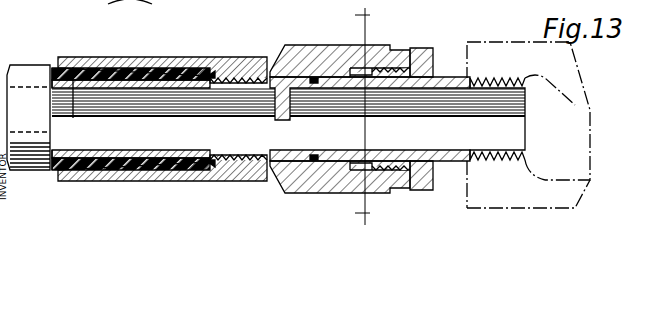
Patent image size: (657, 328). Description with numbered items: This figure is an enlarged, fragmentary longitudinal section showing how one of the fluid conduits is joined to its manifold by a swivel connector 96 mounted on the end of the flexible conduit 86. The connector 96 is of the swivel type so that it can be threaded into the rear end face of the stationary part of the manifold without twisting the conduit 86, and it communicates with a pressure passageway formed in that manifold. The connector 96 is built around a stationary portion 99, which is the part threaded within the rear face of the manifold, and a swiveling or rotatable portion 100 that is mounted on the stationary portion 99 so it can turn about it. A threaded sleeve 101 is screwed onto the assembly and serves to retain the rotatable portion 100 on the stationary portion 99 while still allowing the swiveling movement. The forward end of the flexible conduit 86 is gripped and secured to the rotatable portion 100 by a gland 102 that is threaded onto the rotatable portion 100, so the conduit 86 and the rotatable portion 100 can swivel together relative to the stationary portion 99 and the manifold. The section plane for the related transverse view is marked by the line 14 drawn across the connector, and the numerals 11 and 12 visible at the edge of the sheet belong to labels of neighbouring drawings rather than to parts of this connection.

The reference from adjacent figure 11 is at (214, 0).
The reference from adjacent figure 12 is at (104, 2).
The section line 14- 14 is at (348, 12).
The conduit 86 is at (36, 67).
The connector 96 is at (222, 182).
The stationary portion 99 is at (455, 164).
The rotatable portion 100 is at (298, 195).
The threaded sleeve 101 is at (462, 34).
The gland 102 is at (178, 44).